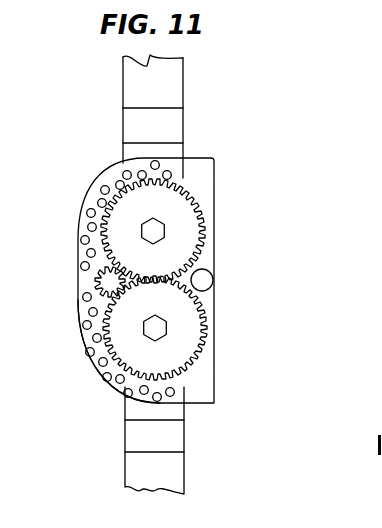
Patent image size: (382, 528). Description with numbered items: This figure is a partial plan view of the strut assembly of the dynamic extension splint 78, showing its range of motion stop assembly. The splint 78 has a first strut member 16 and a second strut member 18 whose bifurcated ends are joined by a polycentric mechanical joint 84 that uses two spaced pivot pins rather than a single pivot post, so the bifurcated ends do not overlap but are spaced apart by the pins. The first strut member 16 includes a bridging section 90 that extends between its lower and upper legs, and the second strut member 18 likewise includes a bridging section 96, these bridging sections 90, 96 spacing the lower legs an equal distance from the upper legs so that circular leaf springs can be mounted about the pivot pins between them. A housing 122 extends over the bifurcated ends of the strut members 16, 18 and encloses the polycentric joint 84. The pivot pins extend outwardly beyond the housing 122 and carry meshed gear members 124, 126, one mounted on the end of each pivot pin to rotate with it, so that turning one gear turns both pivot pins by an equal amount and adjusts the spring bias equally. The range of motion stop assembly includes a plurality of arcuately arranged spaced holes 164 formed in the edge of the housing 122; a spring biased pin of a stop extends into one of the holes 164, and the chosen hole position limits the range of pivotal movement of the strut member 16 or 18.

The first strut member 16 is at (170, 97).
The bridging section 90 is at (133, 134).
The housing 122 is at (203, 383).
The spaced holes 164 is at (81, 241).
The gear member 124 is at (190, 196).
The gear member 126 is at (195, 332).
The dynamic extension splint 78 is at (240, 237).
The second strut member 18 is at (173, 468).
The bridging section 96 is at (173, 432).
The polycentric mechanical joint 84 is at (93, 385).